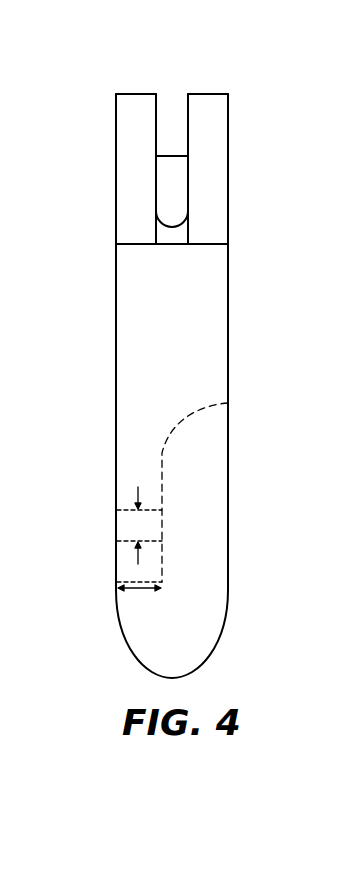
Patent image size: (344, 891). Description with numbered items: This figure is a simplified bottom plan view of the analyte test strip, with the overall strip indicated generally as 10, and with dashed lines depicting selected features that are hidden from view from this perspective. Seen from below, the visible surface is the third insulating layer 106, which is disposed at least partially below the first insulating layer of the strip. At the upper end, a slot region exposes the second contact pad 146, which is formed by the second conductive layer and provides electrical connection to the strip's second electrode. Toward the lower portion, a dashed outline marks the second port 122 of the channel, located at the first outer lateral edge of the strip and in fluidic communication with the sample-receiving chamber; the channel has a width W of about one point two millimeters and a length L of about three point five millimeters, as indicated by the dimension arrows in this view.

The applicator device 10 is at (162, 353).
The third insulating layer 106 is at (193, 311).
The second contact pad 146 is at (173, 197).
The second port 122 is at (117, 527).